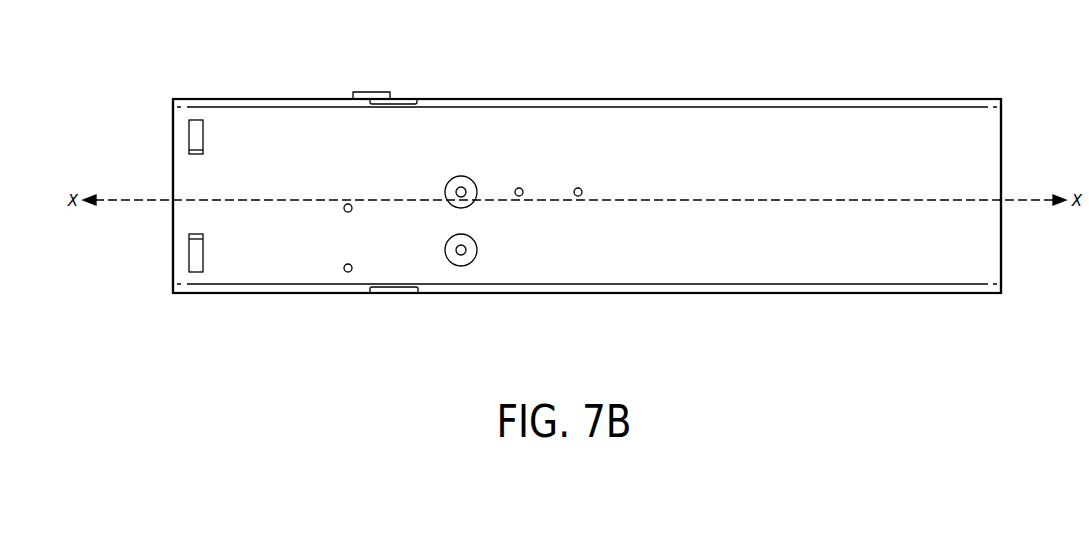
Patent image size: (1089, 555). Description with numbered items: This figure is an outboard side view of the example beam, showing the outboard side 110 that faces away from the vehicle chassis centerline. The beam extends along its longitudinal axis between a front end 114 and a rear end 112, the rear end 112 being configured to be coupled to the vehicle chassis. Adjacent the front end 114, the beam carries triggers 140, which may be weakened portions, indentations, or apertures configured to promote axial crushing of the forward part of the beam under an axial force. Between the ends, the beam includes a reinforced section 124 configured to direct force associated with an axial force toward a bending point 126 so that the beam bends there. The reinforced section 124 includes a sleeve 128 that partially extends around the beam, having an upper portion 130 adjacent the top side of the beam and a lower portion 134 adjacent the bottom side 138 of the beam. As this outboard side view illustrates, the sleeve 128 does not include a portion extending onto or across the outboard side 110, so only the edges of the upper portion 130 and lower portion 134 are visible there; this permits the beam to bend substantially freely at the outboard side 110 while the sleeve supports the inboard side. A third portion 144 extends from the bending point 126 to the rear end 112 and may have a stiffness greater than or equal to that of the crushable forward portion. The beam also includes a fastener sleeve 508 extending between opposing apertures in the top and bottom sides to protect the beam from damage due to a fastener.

The outboard side 110 is at (692, 118).
The rear end 112 is at (1001, 125).
The front end 114 is at (173, 120).
The reinforced section 124 is at (417, 137).
The bending point 126 is at (273, 99).
The sleeve 128 is at (401, 103).
The upper portion 130 is at (533, 99).
The lower portion 134 is at (382, 292).
The bottom side 138 is at (265, 293).
The trigger 140 is at (195, 120).
The third portion 144 is at (753, 262).
The fastener sleeve 508 is at (375, 92).